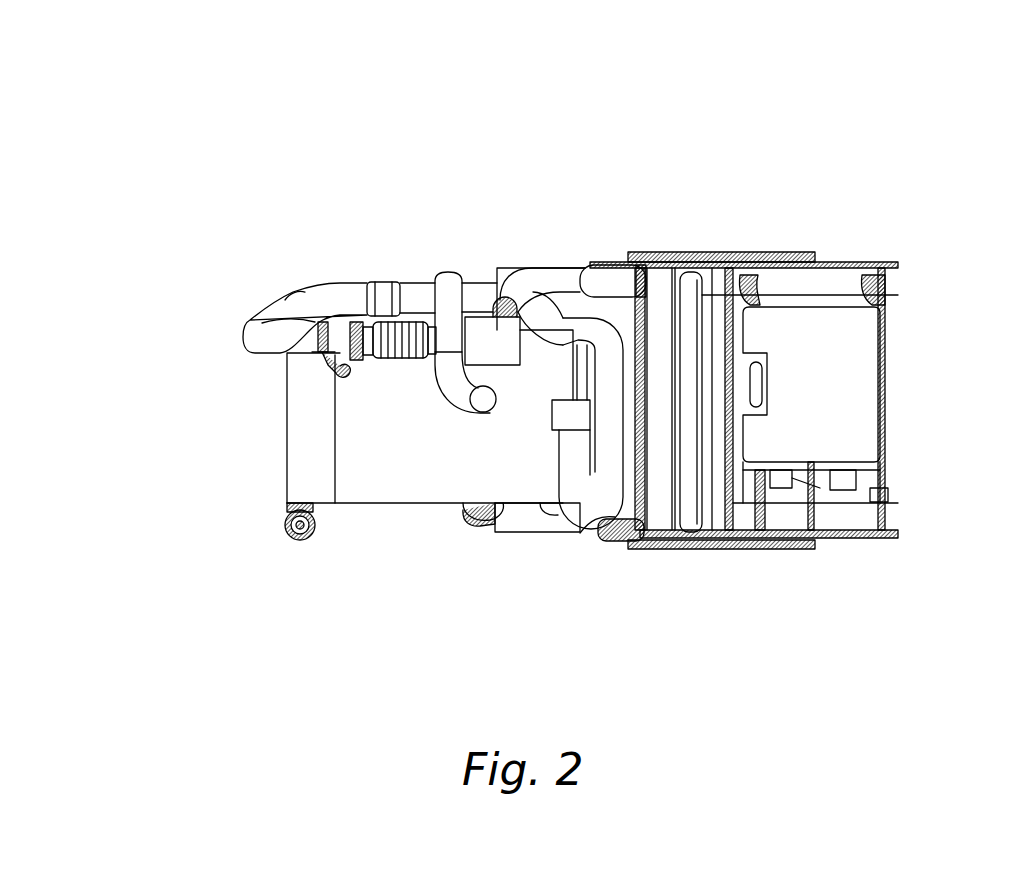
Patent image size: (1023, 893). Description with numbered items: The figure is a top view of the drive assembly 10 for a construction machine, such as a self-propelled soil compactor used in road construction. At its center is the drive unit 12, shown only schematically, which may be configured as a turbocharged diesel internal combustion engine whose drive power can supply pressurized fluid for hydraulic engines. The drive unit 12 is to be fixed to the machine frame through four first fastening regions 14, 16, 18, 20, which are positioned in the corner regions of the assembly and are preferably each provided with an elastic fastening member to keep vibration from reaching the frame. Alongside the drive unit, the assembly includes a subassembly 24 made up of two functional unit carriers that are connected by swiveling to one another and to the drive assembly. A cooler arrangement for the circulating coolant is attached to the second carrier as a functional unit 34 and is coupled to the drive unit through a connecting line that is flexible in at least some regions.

The drive assembly 10 is at (852, 118).
The drive unit 12 is at (287, 418).
The first fastening region 14 is at (298, 539).
The first fastening region 16 is at (598, 542).
The first fastening region 18 is at (603, 303).
The first fastening region 20 is at (292, 292).
The subassembly 24 is at (810, 236).
The functional unit (cooler arrangement) 34 is at (884, 390).